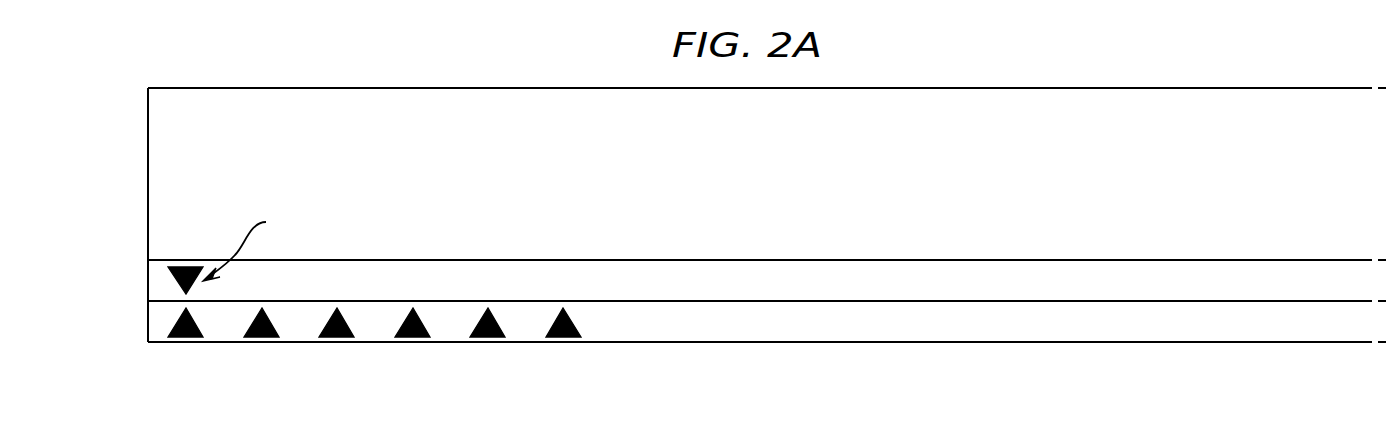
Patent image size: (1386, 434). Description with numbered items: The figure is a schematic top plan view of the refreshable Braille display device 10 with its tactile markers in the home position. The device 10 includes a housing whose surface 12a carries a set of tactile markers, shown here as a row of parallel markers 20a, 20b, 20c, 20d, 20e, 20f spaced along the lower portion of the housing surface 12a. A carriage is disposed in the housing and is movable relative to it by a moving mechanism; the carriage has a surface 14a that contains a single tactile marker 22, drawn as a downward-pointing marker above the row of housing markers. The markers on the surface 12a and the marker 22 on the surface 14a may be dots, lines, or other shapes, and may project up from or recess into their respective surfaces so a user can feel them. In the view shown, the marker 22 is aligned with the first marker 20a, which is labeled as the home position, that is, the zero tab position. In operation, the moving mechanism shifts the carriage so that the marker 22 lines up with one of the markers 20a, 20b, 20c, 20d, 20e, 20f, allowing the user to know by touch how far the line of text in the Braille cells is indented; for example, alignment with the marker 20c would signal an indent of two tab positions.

The refreshable Braille display device 10 is at (1178, 65).
The surface of housing 12a is at (150, 317).
The surface of carriage 14a is at (150, 237).
The tactile marker 22 is at (188, 265).
The tactile marker 20a is at (186, 343).
The tactile marker 20b is at (262, 343).
The tactile marker 20c is at (337, 343).
The tactile marker 20d is at (413, 343).
The tactile marker 20e is at (488, 343).
The tactile marker 20f is at (563, 343).